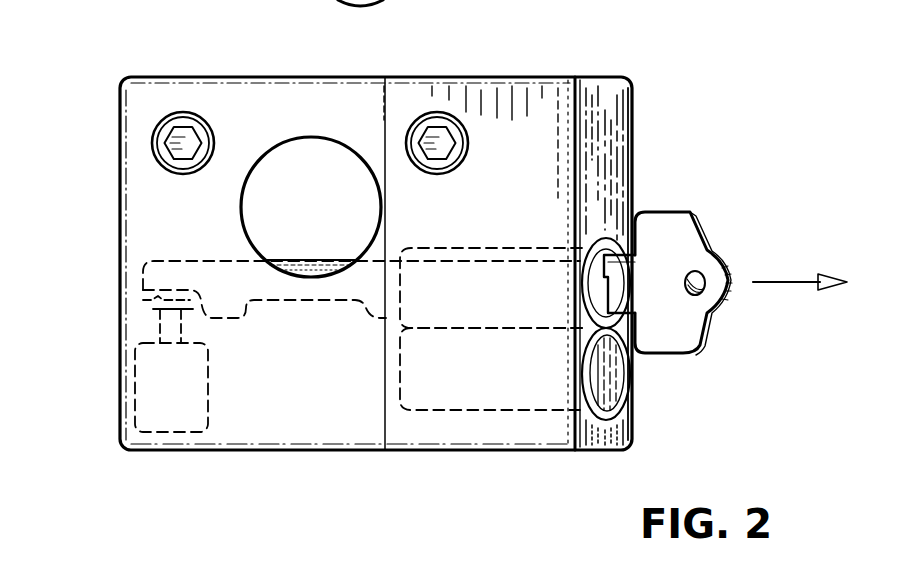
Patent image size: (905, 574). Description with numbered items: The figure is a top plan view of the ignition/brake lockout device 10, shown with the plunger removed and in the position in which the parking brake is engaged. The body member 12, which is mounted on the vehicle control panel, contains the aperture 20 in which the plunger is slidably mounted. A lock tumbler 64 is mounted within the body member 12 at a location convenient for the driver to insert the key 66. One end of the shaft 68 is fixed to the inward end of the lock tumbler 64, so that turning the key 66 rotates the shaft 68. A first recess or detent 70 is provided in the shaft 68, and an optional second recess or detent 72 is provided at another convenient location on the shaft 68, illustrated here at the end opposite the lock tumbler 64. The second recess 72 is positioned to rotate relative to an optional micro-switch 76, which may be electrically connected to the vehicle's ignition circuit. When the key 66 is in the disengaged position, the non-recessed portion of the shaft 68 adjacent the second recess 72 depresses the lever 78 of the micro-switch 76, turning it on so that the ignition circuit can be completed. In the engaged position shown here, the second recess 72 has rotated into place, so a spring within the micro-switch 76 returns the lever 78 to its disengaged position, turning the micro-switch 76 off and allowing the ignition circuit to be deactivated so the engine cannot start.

The ignition/brake lockout device 10 is at (133, 60).
The body member 12 is at (598, 73).
The aperture 20 is at (332, 153).
The lock tumbler 64 is at (495, 246).
The key 66 is at (688, 212).
The shaft 68 is at (314, 260).
The first recess or detent 70 is at (312, 302).
The second recess or detent 72 is at (144, 302).
The micro-switch 76 is at (157, 371).
The lever 78 is at (154, 325).